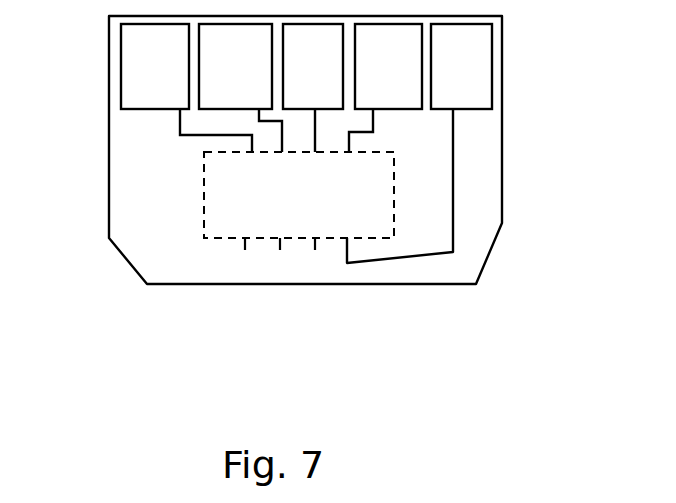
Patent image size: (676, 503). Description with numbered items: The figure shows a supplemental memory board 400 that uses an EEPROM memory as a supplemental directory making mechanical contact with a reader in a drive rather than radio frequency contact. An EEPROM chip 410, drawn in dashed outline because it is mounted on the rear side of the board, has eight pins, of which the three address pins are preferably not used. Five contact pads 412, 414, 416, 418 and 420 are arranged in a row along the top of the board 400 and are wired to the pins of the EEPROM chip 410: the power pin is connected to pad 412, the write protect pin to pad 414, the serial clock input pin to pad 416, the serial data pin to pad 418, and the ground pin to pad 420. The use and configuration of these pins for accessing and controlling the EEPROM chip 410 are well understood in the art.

The supplemental memory board 400 is at (503, 138).
The EEPROM chip 410 is at (205, 228).
The contact pad 412 is at (154, 64).
The contact pad 414 is at (230, 64).
The contact pad 416 is at (314, 64).
The contact pad 418 is at (387, 64).
The contact pad 420 is at (462, 64).